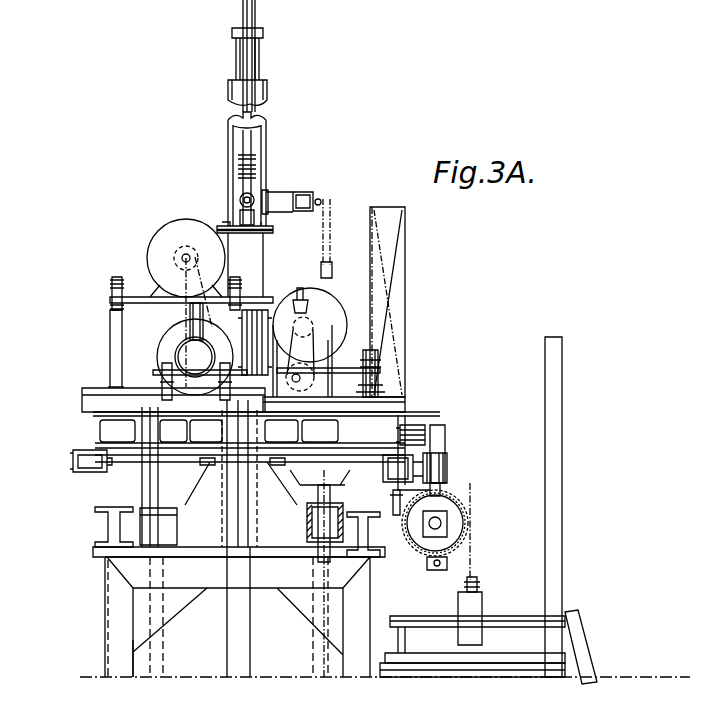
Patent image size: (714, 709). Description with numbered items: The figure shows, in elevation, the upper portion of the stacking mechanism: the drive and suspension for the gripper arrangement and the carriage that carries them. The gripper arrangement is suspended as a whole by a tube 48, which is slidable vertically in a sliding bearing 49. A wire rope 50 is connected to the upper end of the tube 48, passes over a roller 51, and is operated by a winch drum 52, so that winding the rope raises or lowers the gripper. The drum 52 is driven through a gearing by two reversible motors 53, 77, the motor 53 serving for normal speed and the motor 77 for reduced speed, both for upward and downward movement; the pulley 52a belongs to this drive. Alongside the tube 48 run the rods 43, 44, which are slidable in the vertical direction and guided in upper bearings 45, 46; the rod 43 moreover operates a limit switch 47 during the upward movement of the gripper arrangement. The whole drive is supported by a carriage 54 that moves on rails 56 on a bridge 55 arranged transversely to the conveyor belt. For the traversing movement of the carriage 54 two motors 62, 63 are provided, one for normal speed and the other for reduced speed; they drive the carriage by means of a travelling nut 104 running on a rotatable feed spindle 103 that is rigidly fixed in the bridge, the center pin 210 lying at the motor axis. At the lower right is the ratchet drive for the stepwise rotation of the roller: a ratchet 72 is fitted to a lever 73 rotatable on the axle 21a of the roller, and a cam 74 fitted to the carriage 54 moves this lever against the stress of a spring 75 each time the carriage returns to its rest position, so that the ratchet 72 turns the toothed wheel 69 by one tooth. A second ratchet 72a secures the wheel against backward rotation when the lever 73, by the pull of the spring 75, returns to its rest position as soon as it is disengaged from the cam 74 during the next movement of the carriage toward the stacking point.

The roller 51 is at (257, 7).
The wire rope 50 is at (250, 58).
The limit switch 47 is at (305, 193).
The rod 43 is at (333, 210).
The motor 62 is at (161, 287).
The motor 63 is at (161, 303).
The wheel center pin 210 is at (182, 257).
The winch drum 52 is at (260, 307).
The motor pulley 52a is at (320, 305).
The reversible motor 53 is at (370, 337).
The reversible motor 77 is at (331, 373).
The travelling nut 104 is at (150, 349).
The feed spindle 103 is at (188, 357).
The carriage 54 is at (77, 392).
The cam 74 is at (415, 425).
The lever 73 is at (446, 432).
The spring 75 is at (380, 488).
The ratchet 72 is at (445, 480).
The gear 69 is at (454, 512).
The axle 21a is at (448, 523).
The rails 56 is at (120, 508).
The bridge 55 is at (90, 542).
The upper bearing 46 is at (178, 528).
The upper bearing 45 is at (307, 522).
The sliding bearing 49 is at (255, 530).
The second ratchet 72a is at (432, 568).
The tube 48 is at (235, 615).
The rod 44 is at (160, 648).